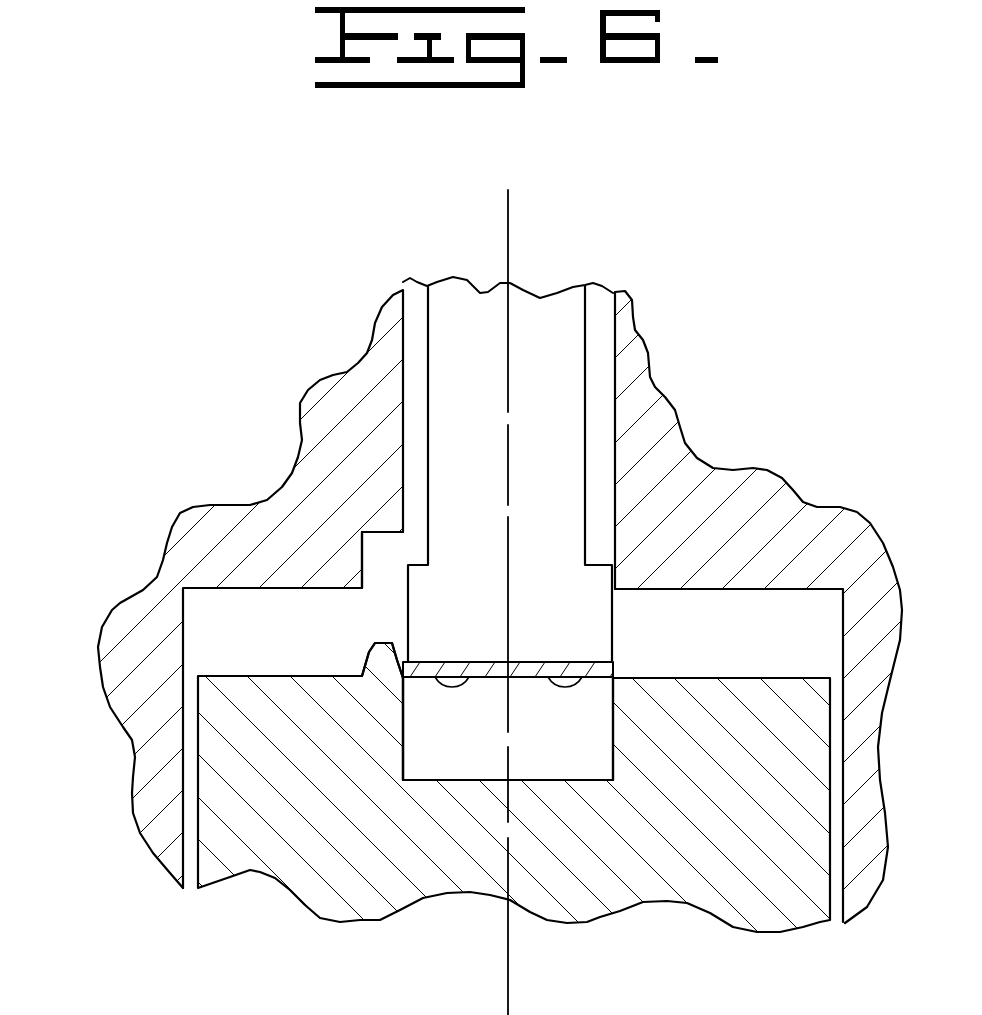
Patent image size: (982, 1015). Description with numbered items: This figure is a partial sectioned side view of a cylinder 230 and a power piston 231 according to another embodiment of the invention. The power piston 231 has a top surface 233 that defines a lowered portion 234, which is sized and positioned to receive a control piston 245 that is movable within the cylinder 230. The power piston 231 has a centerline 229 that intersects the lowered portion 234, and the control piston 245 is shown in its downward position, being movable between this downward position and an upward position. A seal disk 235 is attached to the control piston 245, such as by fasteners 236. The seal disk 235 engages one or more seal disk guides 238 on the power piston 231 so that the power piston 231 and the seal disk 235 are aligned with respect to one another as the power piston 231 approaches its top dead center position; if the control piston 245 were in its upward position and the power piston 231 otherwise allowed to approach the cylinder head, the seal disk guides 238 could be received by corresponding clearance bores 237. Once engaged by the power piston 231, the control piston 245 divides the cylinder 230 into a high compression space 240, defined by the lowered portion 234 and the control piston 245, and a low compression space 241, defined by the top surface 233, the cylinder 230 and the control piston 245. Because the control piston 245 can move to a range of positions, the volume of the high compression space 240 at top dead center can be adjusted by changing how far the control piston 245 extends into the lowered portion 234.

The centerline 229 is at (510, 968).
The cylinder 230 is at (255, 630).
The power piston 231 is at (270, 843).
The top surface 233 is at (775, 676).
The lowered portion 234 is at (406, 724).
The seal disk 235 is at (618, 673).
The fasteners 236 is at (447, 680).
The clearance bores 237 is at (347, 580).
The seal disk guides 238 is at (367, 657).
The high compression space 240 is at (585, 741).
The low compression space 241 is at (210, 650).
The control piston 245 is at (488, 552).